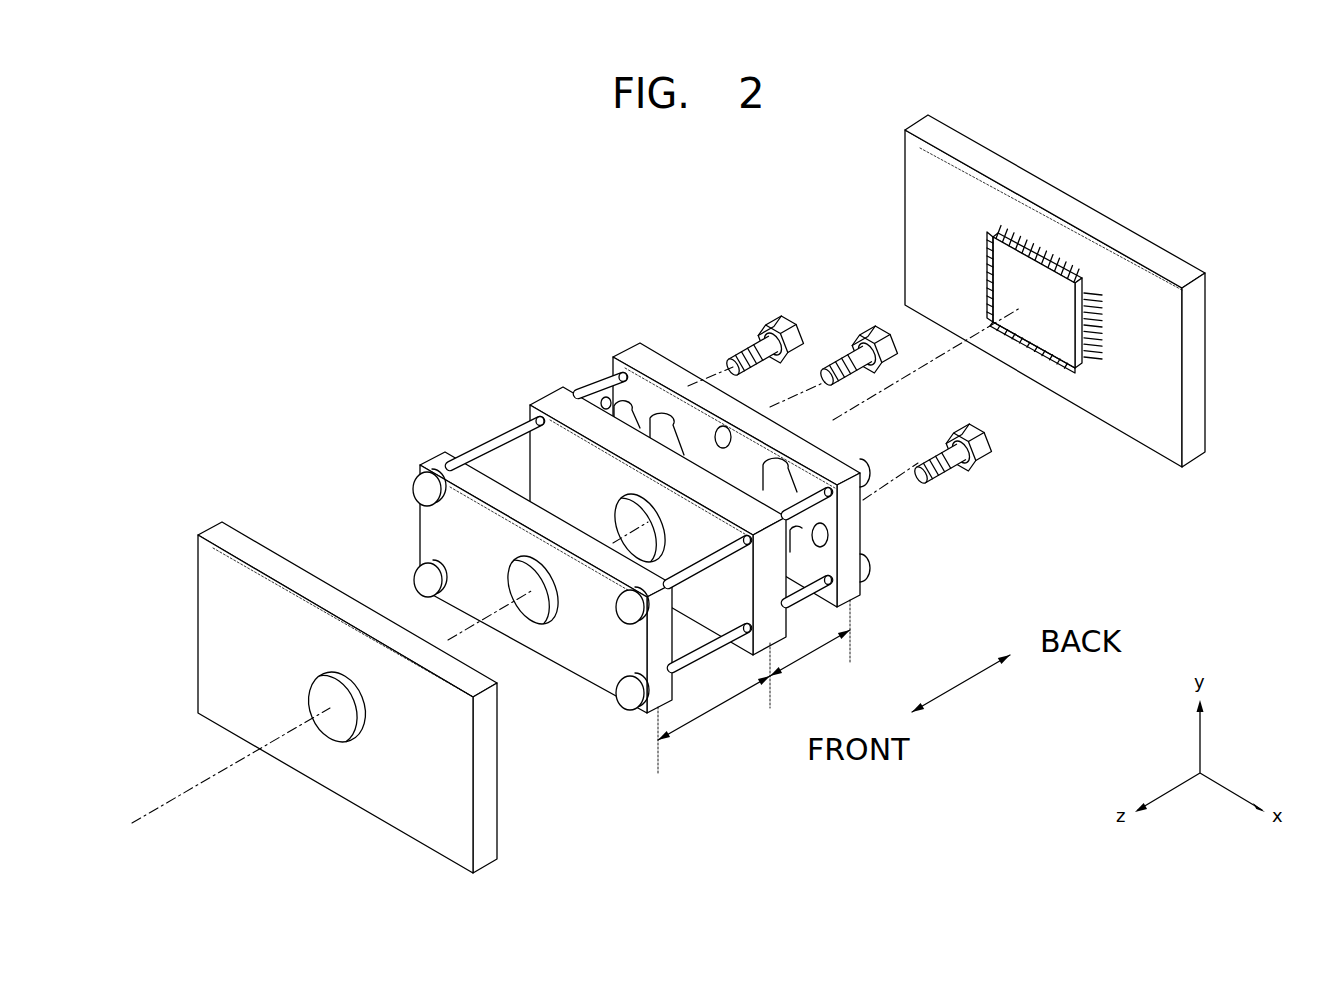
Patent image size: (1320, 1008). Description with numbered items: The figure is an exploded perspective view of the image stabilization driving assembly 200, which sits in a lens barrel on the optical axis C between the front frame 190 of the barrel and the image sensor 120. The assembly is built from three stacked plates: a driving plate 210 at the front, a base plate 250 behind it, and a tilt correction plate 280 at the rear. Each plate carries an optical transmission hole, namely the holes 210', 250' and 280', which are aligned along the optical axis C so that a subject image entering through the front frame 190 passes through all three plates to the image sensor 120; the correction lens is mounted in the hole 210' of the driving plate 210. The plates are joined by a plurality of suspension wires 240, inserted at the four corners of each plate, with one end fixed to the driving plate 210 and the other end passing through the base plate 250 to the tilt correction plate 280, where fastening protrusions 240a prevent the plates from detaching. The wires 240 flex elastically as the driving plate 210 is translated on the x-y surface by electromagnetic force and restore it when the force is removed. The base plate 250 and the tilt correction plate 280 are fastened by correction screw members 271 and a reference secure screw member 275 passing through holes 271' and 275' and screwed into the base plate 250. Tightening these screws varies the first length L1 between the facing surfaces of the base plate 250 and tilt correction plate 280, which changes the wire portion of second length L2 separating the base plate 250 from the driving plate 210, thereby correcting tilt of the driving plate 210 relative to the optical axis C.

The image stabilization driving assembly 200 is at (396, 314).
The front frame 190 is at (217, 534).
The driving plate 210 is at (527, 554).
The optical transmission hole of the driving plate 210' is at (533, 641).
The base plate 250 is at (639, 495).
The optical transmission hole of the base plate 250' is at (557, 475).
The tilt correction plate 280 is at (724, 446).
The optical transmission hole of the tilt correction plate 280' is at (758, 476).
The reference secure screw member 275 is at (763, 316).
The bolt hole for fixing bolt 275' is at (583, 371).
The correction screw member 271 is at (919, 408).
The bolt hole for coupling bolt 271' is at (814, 432).
The suspension wire 240 is at (697, 664).
The fastening protrusion 240a is at (627, 702).
The image sensor 120 is at (1048, 347).
The optical axis C is at (168, 797).
The first length L1 is at (810, 642).
The second length portion L2 is at (714, 708).